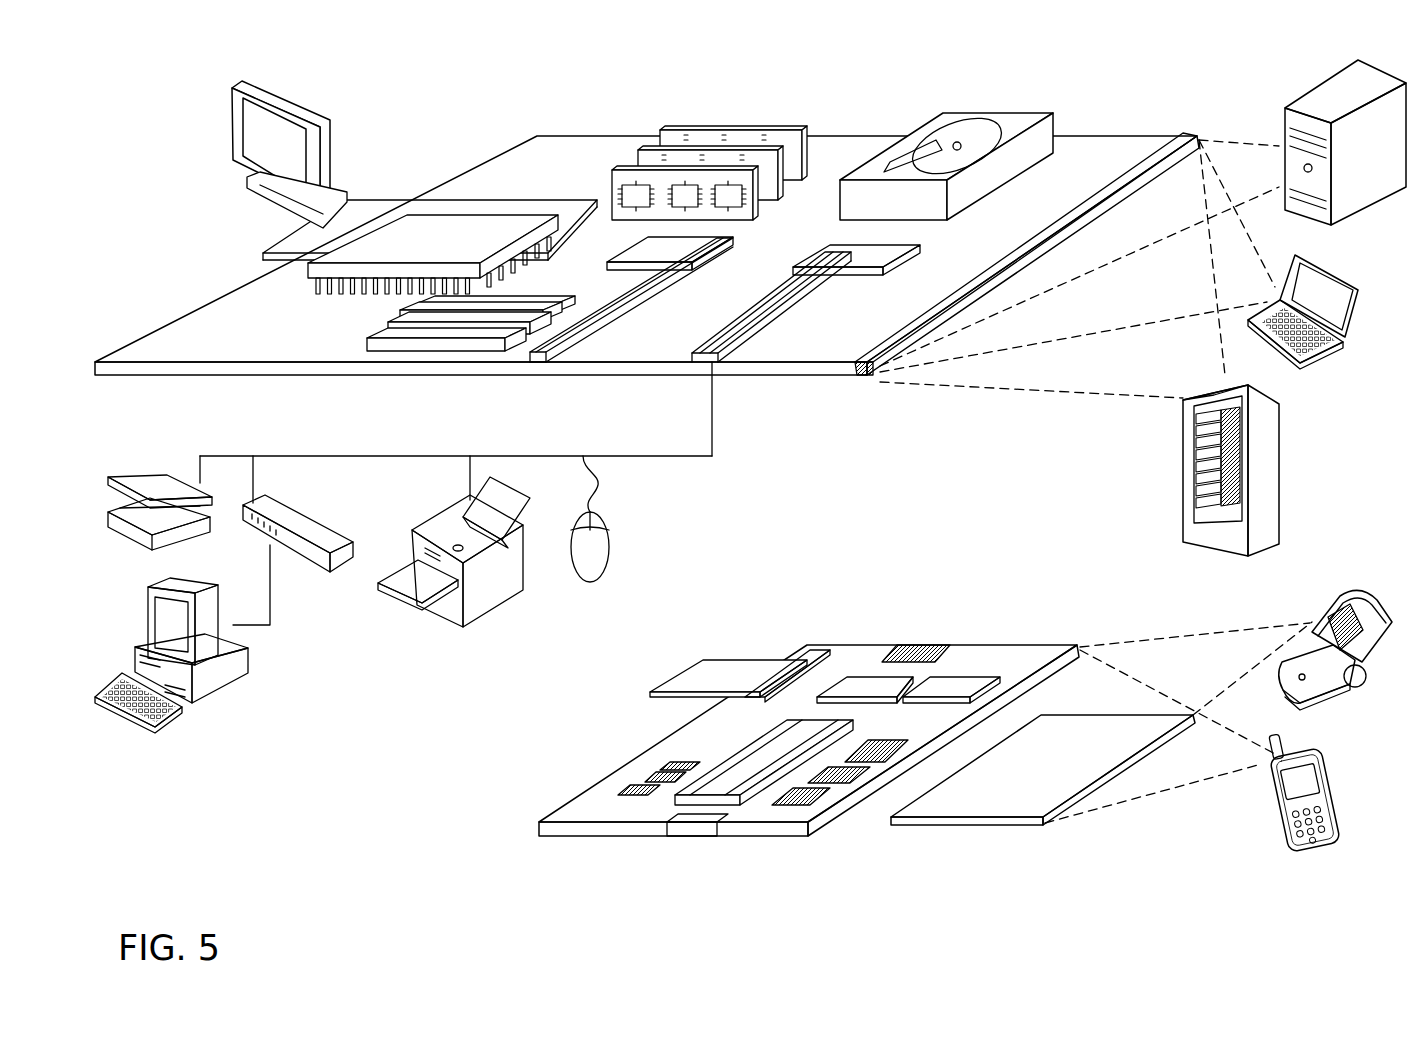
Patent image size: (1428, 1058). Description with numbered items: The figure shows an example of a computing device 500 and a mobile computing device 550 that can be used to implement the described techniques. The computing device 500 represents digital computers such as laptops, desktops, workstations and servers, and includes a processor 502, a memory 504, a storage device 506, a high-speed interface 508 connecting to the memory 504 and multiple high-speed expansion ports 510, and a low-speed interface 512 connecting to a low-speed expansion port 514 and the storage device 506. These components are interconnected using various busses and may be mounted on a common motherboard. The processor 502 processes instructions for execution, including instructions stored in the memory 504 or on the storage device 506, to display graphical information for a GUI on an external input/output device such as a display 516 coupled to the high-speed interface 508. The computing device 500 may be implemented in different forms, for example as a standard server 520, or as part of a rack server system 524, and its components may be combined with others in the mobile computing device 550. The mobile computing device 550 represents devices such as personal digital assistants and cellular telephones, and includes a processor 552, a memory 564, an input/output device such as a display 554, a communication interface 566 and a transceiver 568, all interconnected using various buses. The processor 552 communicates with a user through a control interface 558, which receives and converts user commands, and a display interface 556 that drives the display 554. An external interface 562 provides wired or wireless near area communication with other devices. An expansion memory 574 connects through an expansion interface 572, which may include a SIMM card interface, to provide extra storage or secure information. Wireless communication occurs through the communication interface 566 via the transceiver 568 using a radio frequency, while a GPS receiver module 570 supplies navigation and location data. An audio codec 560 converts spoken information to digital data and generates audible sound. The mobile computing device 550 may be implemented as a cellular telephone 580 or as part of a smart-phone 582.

The computing device 500 is at (450, 106).
The processor 502 is at (308, 268).
The memory 504 is at (665, 128).
The storage device 506 is at (930, 116).
The high-speed interface 508 is at (617, 233).
The high-speed expansion ports 510 is at (383, 331).
The low-speed interface 512 is at (836, 255).
The low-speed expansion port 514 is at (723, 363).
The display 516 is at (240, 84).
The standard server 520 is at (1276, 121).
The rack server system 524 is at (1183, 497).
The mobile computing device 550 is at (509, 834).
The processor 552 is at (736, 790).
The display 554 is at (996, 808).
The display interface 556 is at (811, 798).
The control interface 558 is at (846, 768).
The audio codec 560 is at (876, 750).
The external interface 562 is at (698, 823).
The memory 564 is at (638, 778).
The communication interface 566 is at (868, 688).
The transceiver 568 is at (953, 688).
The GPS receiver module 570 is at (923, 646).
The expansion interface 572 is at (792, 660).
The expansion memory 574 is at (695, 657).
The cellular telephone 580 is at (1343, 598).
The smart-phone 582 is at (1275, 795).